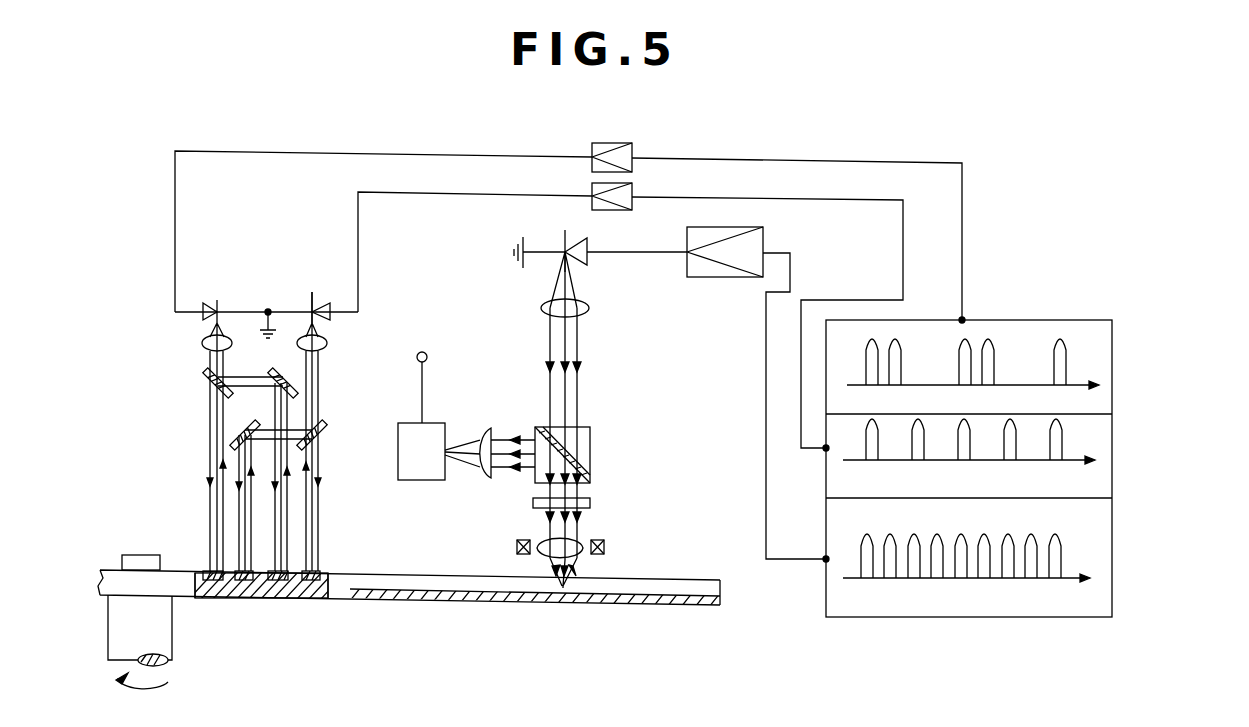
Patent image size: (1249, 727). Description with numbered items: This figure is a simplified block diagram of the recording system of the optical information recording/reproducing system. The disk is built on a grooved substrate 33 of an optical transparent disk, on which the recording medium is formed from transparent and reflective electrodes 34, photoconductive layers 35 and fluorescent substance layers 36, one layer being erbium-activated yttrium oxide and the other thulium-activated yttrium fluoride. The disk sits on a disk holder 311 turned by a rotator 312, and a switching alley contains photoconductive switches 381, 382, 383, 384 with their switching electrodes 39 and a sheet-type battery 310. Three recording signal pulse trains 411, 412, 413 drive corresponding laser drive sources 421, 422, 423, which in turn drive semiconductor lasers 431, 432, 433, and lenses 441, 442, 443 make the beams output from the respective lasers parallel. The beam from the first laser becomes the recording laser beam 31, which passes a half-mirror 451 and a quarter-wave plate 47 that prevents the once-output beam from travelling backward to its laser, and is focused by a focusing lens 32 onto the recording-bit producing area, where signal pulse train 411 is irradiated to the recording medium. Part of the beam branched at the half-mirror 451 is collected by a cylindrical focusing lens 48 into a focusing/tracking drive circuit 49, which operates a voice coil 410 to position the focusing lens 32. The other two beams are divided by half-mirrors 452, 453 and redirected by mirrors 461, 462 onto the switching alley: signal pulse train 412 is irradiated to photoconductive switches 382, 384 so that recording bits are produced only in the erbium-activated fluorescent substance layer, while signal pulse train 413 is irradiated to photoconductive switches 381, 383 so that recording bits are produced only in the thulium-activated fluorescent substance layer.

The recording laser beam 31 is at (577, 539).
The focusing lens 32 is at (540, 540).
The grooved substrate 33 is at (690, 578).
The transparent and reflective electrodes 34 is at (660, 605).
The photoconductive layers 35 is at (576, 620).
The fluorescent substance layers 36 is at (661, 620).
The switching electrodes 39 is at (324, 583).
The λ/4 plate 47 is at (591, 503).
The cylindrical focusing lens 48 is at (486, 428).
The focusing/tracking drive circuit 49 is at (437, 423).
The sheet-type battery 310 is at (313, 561).
The disk holder 311 is at (148, 555).
The rotator 312 is at (172, 640).
The photoconductive switch 381 is at (209, 598).
The photoconductive switch 382 is at (241, 598).
The photoconductive switch 383 is at (275, 598).
The photoconductive switch 384 is at (306, 598).
The voice coil 410 is at (516, 547).
The signal pulse train 411 is at (1112, 572).
The signal pulse train 412 is at (1112, 458).
The signal pulse train 413 is at (1112, 366).
The laser drive source 421 is at (764, 232).
The laser drive source 422 is at (633, 190).
The laser drive source 423 is at (624, 143).
The semiconductor laser 431 is at (588, 240).
The semiconductor laser 432 is at (320, 303).
The semiconductor laser 433 is at (214, 303).
The lens 441 is at (590, 310).
The lens 442 is at (327, 343).
The lens 443 is at (202, 343).
The half-mirror 451 is at (591, 452).
The half-mirror 452 is at (327, 432).
The half-mirror 453 is at (205, 377).
The mirror 461 is at (241, 430).
The mirror 462 is at (288, 375).